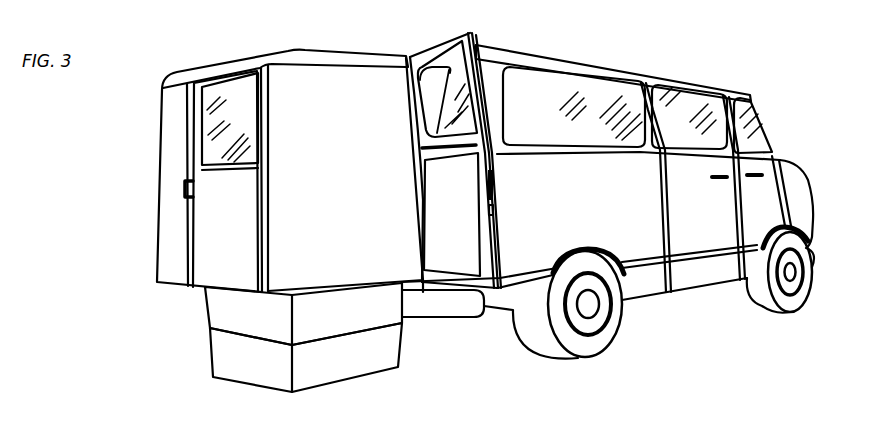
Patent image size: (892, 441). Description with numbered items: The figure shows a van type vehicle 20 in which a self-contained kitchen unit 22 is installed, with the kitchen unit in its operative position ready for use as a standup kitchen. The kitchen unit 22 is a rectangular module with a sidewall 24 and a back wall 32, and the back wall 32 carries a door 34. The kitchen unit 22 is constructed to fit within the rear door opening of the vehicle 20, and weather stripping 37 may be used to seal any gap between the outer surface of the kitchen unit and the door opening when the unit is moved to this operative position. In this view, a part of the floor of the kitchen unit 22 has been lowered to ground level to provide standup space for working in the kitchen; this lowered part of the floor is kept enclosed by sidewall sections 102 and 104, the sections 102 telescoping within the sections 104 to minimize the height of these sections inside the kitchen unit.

The van type vehicle 20 is at (613, 61).
The kitchen unit 22 is at (344, 45).
The sidewall 24 is at (360, 192).
The back wall 32 is at (173, 139).
The door 34 is at (232, 225).
The weather stripping 37 is at (470, 33).
The sidewall sections 102 is at (258, 366).
The sidewall sections 104 is at (256, 321).